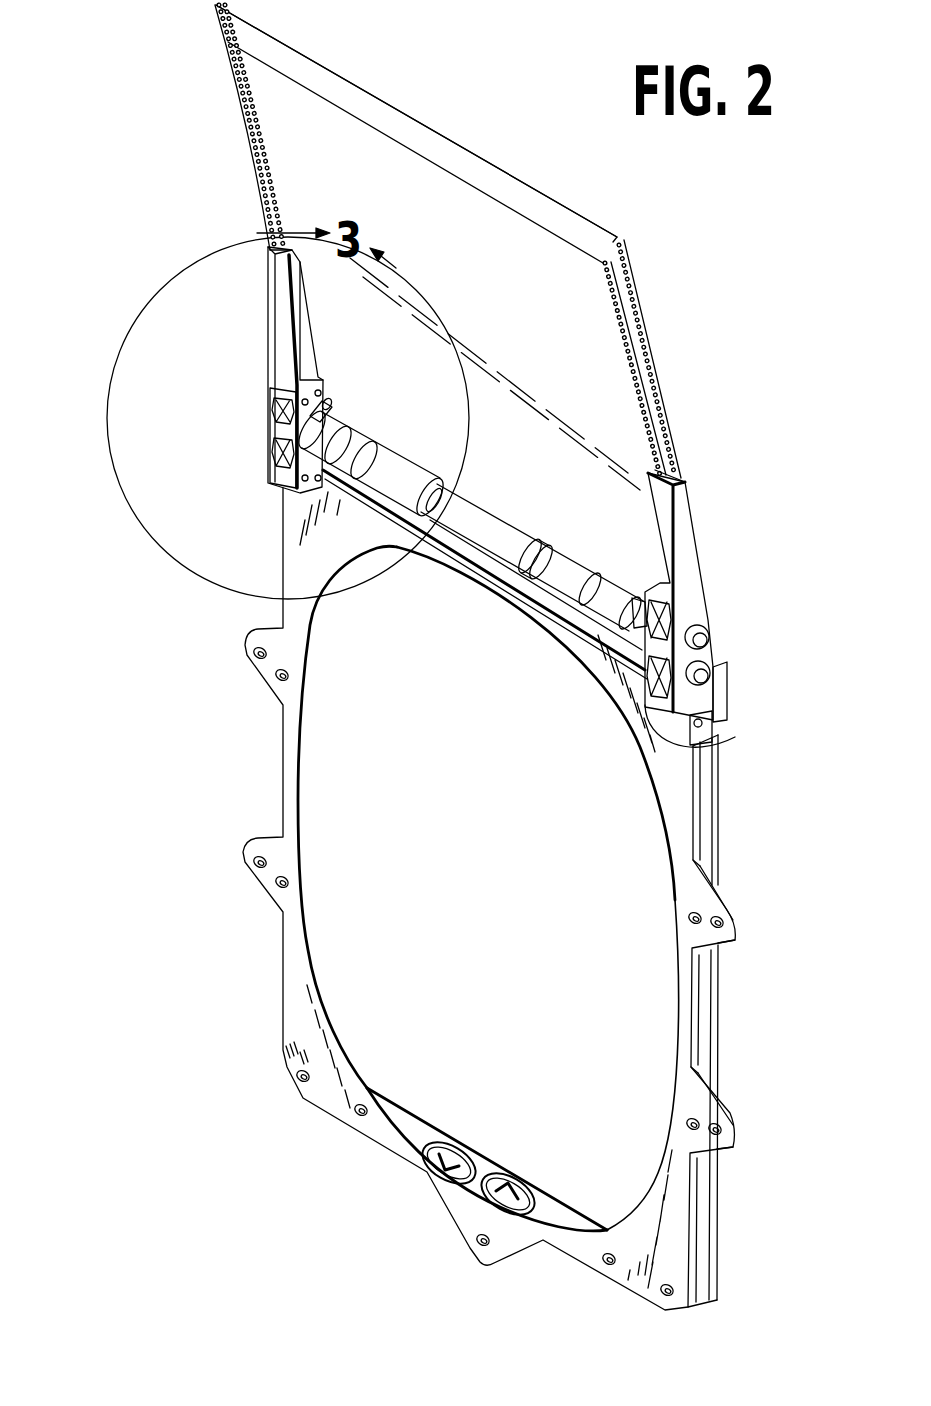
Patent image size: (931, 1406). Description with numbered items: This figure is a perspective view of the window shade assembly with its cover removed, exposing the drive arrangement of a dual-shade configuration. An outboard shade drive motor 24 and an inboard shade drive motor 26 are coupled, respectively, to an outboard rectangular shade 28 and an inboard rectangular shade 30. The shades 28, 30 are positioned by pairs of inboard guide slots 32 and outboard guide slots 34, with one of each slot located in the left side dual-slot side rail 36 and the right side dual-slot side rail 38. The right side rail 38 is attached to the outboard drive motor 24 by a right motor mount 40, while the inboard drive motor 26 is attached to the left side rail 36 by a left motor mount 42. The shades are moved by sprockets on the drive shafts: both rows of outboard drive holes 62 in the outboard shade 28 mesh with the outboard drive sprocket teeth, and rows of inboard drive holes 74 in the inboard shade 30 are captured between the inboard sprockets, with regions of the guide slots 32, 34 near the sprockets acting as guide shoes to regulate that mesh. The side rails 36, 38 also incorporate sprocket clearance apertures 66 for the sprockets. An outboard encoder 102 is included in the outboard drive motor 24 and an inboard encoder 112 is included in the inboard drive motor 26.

The outboard shade drive motor 24 is at (580, 583).
The inboard shade drive motor 26 is at (388, 478).
The outboard rectangular shade 28 is at (515, 190).
The inboard rectangular shade 30 is at (405, 165).
The inboard guide slot 32 is at (285, 252).
The outboard guide slot 34 is at (288, 255).
The left side dual-slot side rail 36 is at (260, 790).
The right side dual-slot side rail 38 is at (703, 802).
The right motor mount 40 is at (639, 607).
The left motor mount 42 is at (318, 428).
The outboard drive holes 62 is at (225, 40).
The sprocket clearance apertures 66 is at (276, 426).
The inboard drive holes 74 is at (254, 122).
The outboard encoder 102 is at (538, 553).
The inboard encoder 112 is at (425, 497).